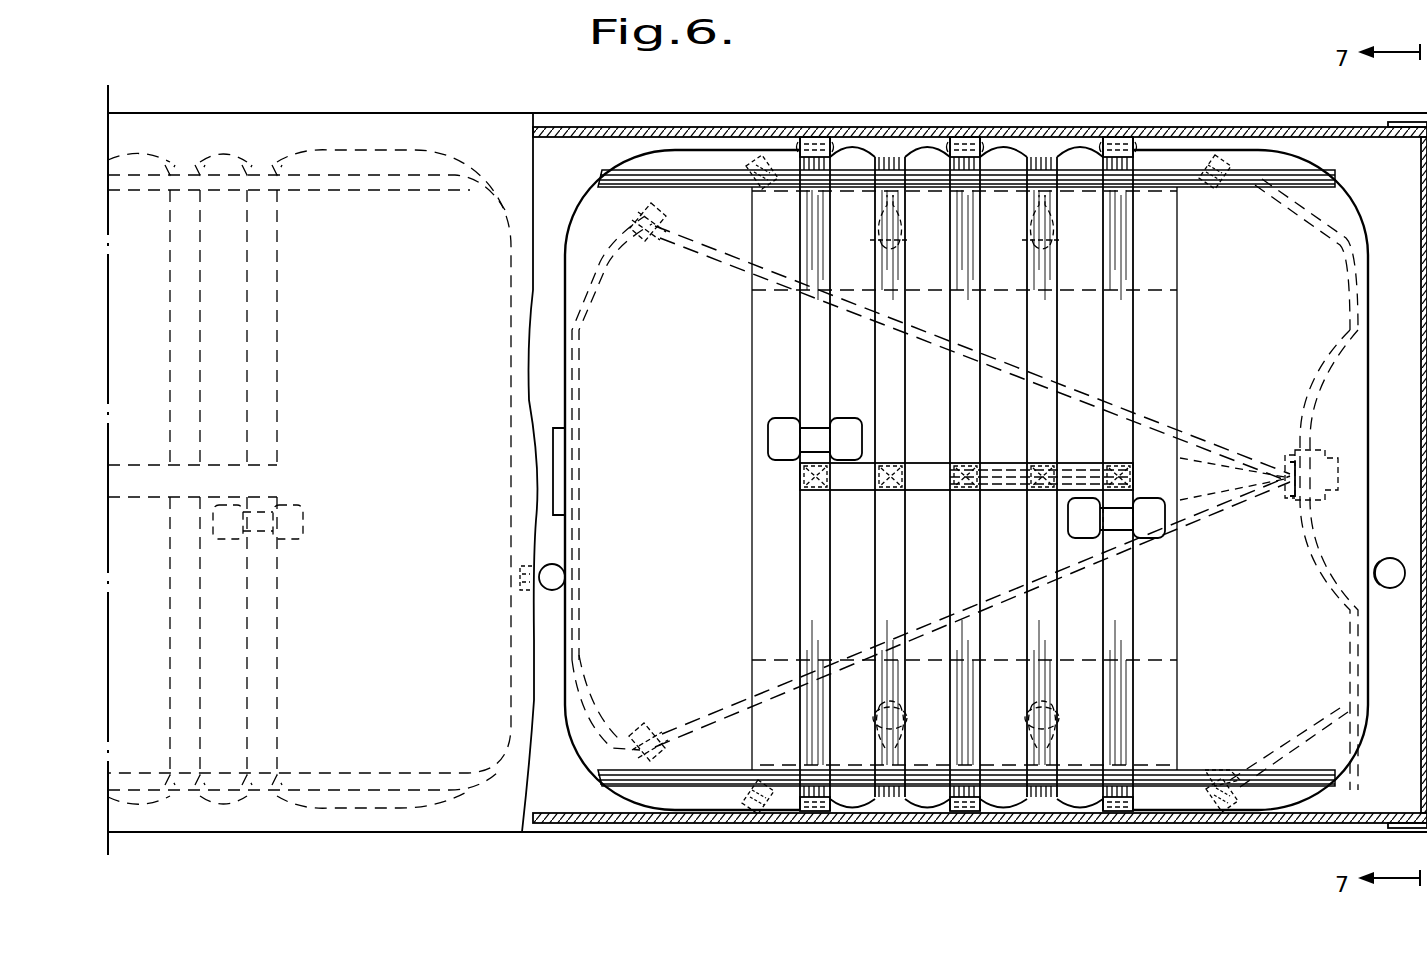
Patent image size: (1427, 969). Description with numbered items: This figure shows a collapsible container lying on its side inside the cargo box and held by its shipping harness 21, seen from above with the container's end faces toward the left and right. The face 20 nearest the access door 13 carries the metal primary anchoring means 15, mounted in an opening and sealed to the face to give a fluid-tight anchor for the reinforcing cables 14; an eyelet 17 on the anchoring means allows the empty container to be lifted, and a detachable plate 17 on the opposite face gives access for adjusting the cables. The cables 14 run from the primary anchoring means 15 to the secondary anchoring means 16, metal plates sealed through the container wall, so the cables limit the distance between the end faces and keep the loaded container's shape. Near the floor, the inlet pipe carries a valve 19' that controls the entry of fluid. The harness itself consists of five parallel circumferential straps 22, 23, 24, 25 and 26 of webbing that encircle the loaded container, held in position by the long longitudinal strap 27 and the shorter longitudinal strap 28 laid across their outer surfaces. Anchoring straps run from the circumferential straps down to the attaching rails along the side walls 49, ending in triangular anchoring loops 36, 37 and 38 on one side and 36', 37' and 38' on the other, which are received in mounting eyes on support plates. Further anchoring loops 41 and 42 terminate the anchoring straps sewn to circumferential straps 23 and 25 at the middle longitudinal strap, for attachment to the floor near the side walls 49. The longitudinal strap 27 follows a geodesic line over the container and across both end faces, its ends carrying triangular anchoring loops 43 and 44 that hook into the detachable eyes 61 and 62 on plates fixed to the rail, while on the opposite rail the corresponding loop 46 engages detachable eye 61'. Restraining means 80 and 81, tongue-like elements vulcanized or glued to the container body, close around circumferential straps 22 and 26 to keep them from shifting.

The access door 13 is at (1421, 345).
The reinforcing cable 14 is at (724, 246).
The primary anchoring means 15 is at (1290, 460).
The secondary anchoring means 16 is at (650, 240).
The eyelet / metal plate 17 is at (566, 433).
The valve 19' is at (1394, 548).
The face 20 is at (560, 655).
The shipping harness 21 is at (1135, 305).
The circumferential strap 22 is at (1110, 371).
The circumferential strap 23 is at (1030, 391).
The circumferential strap 24 is at (962, 380).
The circumferential strap 25 is at (890, 374).
The circumferential strap 26 is at (812, 358).
The longitudinal strap 27 is at (375, 190).
The longitudinal strap 28 is at (933, 490).
The triangular anchoring loop 36 is at (1124, 834).
The triangular anchoring loop 36' is at (1138, 118).
The triangular anchoring loop 37 is at (984, 830).
The triangular anchoring loop 37' is at (988, 116).
The triangular anchoring loop 38 is at (833, 836).
The triangular anchoring loop 38' is at (842, 116).
The triangular anchoring loop 41 is at (1055, 720).
The triangular anchoring loop 42 is at (905, 720).
The triangular anchoring loop 43 is at (1215, 772).
The triangular anchoring loop 44 is at (712, 775).
The triangular anchoring loop 46 is at (966, 203).
The side wall 49 is at (1258, 128).
The detachable eye / bolt 61 is at (1209, 822).
The detachable eye 61' is at (1211, 134).
The detachable eye 62 is at (770, 188).
The restraining means 80 is at (305, 532).
The restraining means 81 is at (850, 420).